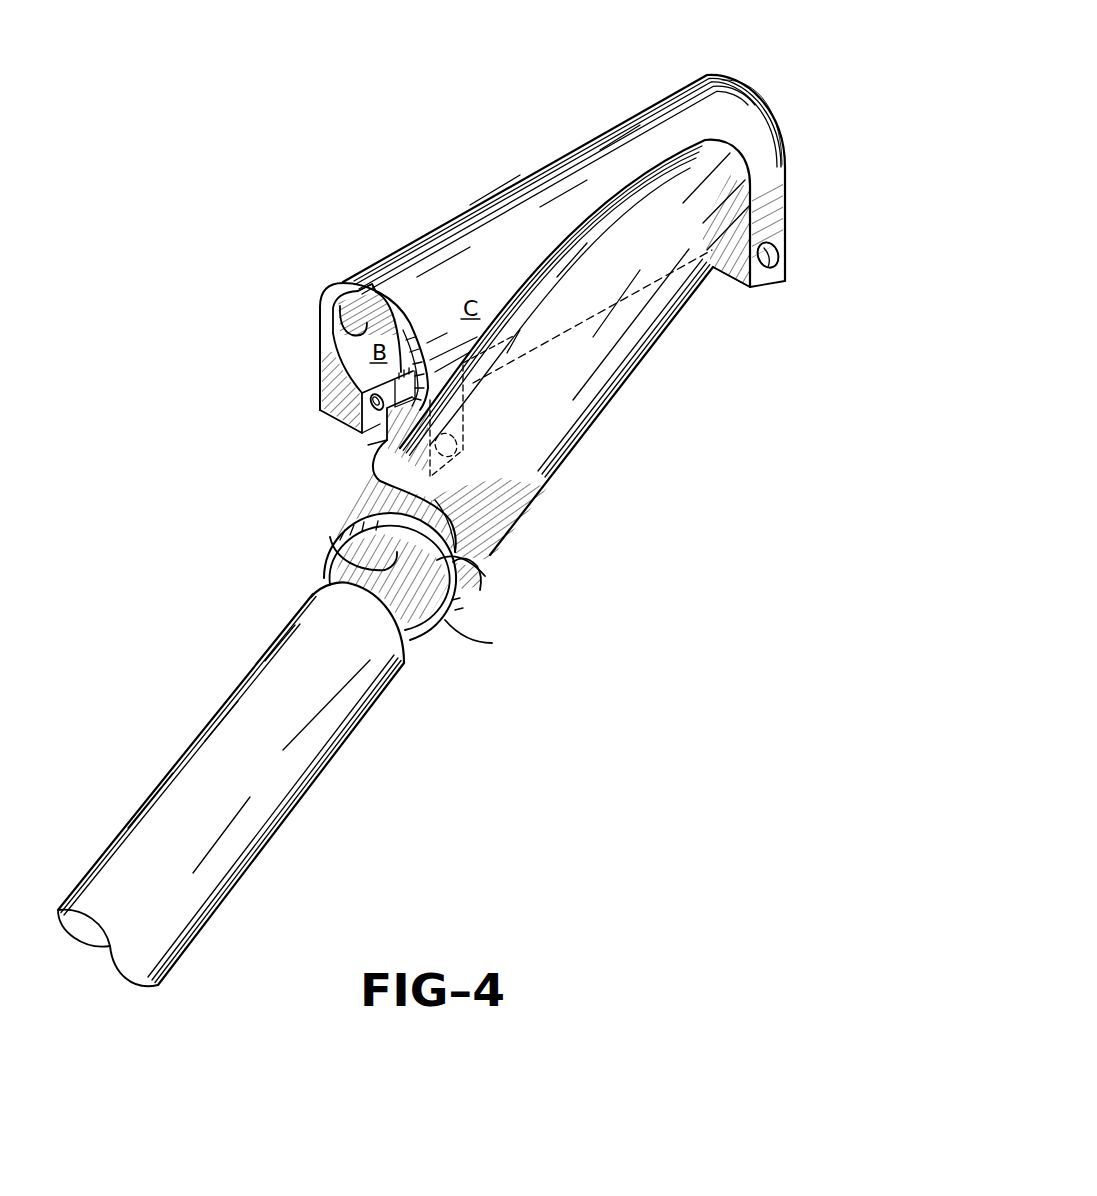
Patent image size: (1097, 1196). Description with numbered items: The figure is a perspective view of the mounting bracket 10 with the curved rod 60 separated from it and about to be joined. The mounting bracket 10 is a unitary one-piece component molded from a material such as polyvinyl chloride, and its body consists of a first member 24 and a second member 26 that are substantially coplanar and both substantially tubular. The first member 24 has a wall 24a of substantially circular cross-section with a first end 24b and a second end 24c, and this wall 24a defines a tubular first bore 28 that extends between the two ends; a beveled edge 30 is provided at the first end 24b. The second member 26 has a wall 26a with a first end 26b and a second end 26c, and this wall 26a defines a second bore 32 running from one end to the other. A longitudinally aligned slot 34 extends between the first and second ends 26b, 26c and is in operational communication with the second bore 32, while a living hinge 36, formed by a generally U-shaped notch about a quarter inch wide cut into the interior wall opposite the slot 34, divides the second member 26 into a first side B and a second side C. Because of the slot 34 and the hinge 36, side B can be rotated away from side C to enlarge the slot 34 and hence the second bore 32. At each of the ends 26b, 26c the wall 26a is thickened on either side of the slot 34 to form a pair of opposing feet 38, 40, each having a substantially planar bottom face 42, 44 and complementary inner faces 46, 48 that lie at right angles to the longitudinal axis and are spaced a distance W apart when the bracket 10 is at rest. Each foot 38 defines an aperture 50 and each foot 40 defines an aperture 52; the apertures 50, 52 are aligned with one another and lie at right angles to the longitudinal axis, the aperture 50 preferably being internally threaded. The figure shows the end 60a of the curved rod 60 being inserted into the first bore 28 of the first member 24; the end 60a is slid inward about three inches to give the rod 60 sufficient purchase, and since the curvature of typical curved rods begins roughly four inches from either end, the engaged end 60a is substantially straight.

The mounting bracket 10 is at (535, 140).
The first member 24 is at (627, 405).
The wall 24a is at (583, 430).
The first end 24b is at (458, 561).
The second end 24c is at (704, 152).
The second member 26 is at (505, 167).
The wall 26a is at (503, 205).
The first end 26b is at (335, 291).
The second end 26c is at (728, 78).
The first bore 28 is at (358, 550).
The beveled edge 30 is at (450, 619).
The second bore 32 is at (362, 334).
The slot 34 is at (390, 408).
The living hinge 36 is at (373, 286).
The foot 38 is at (312, 397).
The foot 40 is at (792, 251).
The bottom face 42 is at (362, 422).
The bottom face 44 is at (735, 286).
The inner face 46 is at (378, 416).
The inner face 48 is at (712, 253).
The aperture 50 is at (368, 445).
The aperture 52 is at (775, 266).
The curved rod 60 is at (172, 736).
The end 60a is at (316, 600).